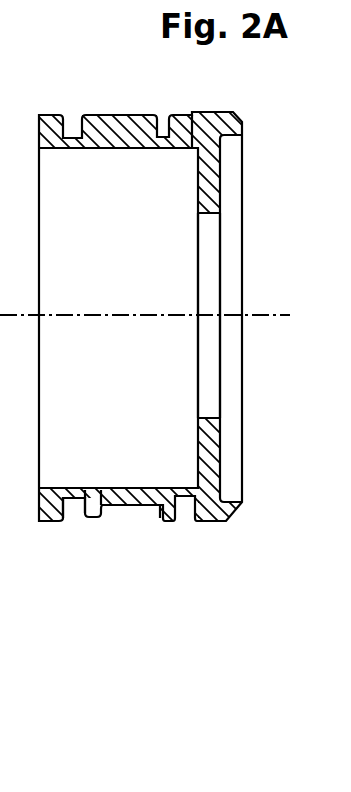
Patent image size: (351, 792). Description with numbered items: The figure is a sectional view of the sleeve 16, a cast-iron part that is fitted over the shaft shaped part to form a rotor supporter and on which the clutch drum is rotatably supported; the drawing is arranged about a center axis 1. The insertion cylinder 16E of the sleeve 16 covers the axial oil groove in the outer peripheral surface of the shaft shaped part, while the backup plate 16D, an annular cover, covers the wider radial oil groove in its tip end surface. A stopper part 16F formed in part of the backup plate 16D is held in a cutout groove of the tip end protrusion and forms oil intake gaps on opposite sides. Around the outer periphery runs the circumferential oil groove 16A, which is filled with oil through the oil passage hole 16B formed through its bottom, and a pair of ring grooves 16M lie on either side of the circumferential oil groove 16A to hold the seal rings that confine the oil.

The optical axis / lens barrel 1 is at (170, 349).
The sleeve 16 is at (175, 349).
The circumferential oil groove 16A is at (130, 510).
The oil passage hole 16B is at (130, 490).
The backup plate 16D is at (202, 220).
The insertion cylinder 16E is at (157, 150).
The stopper part 16F is at (203, 413).
The ring grooves 16M is at (73, 512).